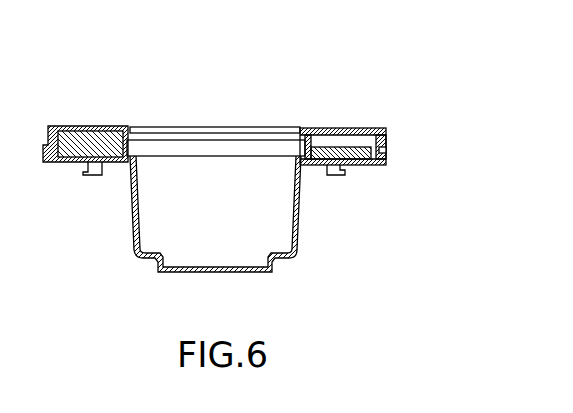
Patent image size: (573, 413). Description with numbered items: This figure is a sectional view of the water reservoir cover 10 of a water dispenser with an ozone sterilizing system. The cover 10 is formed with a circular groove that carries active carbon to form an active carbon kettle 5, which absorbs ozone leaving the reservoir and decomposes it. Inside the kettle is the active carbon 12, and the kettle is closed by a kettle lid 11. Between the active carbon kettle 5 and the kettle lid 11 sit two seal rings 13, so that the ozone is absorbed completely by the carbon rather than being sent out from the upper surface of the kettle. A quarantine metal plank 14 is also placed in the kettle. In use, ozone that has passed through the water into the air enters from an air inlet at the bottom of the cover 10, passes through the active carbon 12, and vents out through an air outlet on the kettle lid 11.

The active carbon kettle 5 is at (363, 150).
The water reservoir cover 10 is at (298, 222).
The kettle lid 11 is at (77, 128).
The active carbon 12 is at (101, 138).
The seal rings 13 is at (324, 128).
The quarantine metal plank 14 is at (357, 143).